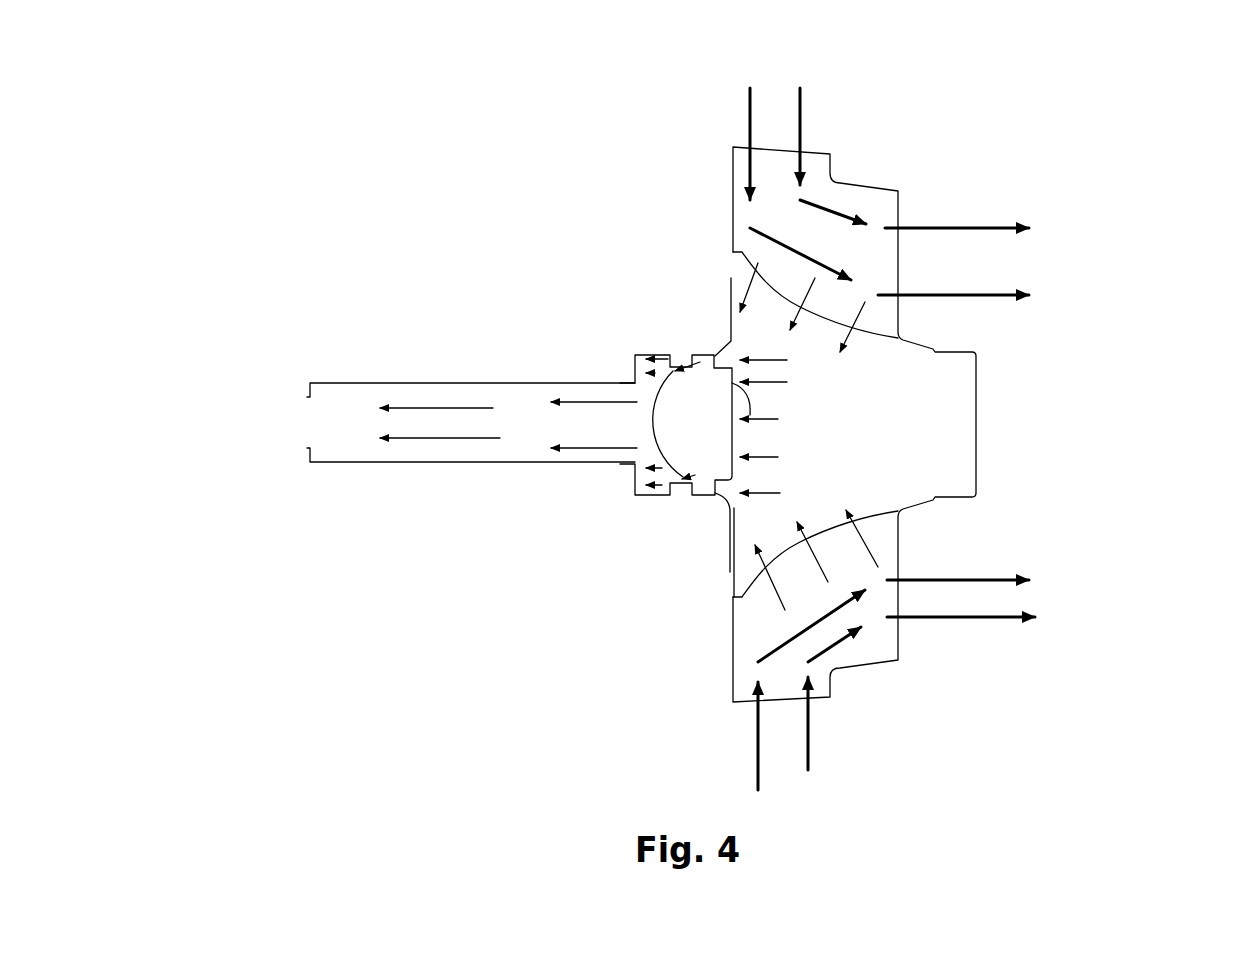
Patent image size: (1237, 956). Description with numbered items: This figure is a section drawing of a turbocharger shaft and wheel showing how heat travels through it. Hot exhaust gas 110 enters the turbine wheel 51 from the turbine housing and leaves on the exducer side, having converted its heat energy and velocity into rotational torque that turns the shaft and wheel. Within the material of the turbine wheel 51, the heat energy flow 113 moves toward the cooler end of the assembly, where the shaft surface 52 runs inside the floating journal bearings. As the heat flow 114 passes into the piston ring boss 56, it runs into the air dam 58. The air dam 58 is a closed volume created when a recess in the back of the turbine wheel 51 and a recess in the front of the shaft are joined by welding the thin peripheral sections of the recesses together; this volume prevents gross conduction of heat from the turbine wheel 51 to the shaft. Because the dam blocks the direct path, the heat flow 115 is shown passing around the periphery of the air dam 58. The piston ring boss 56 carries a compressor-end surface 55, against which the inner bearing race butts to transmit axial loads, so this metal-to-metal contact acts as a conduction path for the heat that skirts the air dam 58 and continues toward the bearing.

The exhaust gas 110 is at (800, 132).
The turbine wheel 51 is at (848, 412).
The shaft surface 52 is at (457, 468).
The compressor-end surface 55 is at (635, 478).
The piston ring boss 56 is at (703, 437).
The air dam 58 is at (693, 495).
The heat energy flow 113 is at (805, 291).
The heat flow 114 is at (735, 381).
The heat flow around the air dam 115 is at (636, 357).